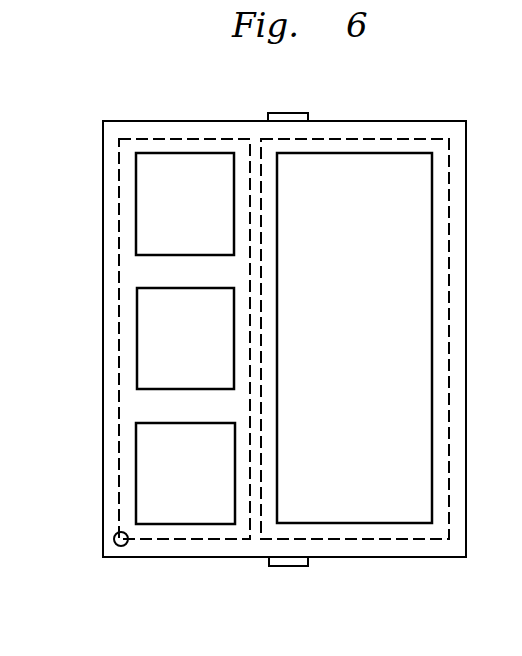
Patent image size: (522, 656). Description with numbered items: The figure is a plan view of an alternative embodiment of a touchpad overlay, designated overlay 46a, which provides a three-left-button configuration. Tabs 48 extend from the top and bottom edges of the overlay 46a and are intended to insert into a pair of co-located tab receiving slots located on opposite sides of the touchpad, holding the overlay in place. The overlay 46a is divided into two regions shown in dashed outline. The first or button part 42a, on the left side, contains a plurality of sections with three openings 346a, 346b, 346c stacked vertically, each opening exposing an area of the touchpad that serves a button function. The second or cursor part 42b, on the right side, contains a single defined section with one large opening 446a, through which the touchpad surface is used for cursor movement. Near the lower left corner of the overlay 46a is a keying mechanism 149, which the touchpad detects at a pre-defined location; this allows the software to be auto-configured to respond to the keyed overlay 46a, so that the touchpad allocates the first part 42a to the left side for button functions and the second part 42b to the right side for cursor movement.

The first part 42a is at (187, 138).
The second part 42b is at (383, 137).
The overlay 46a is at (103, 262).
The tabs 48 is at (290, 112).
The keying mechanism 149 is at (121, 546).
The opening 346a is at (131, 180).
The opening 346b is at (131, 319).
The opening 346c is at (131, 494).
The opening 446a is at (383, 530).